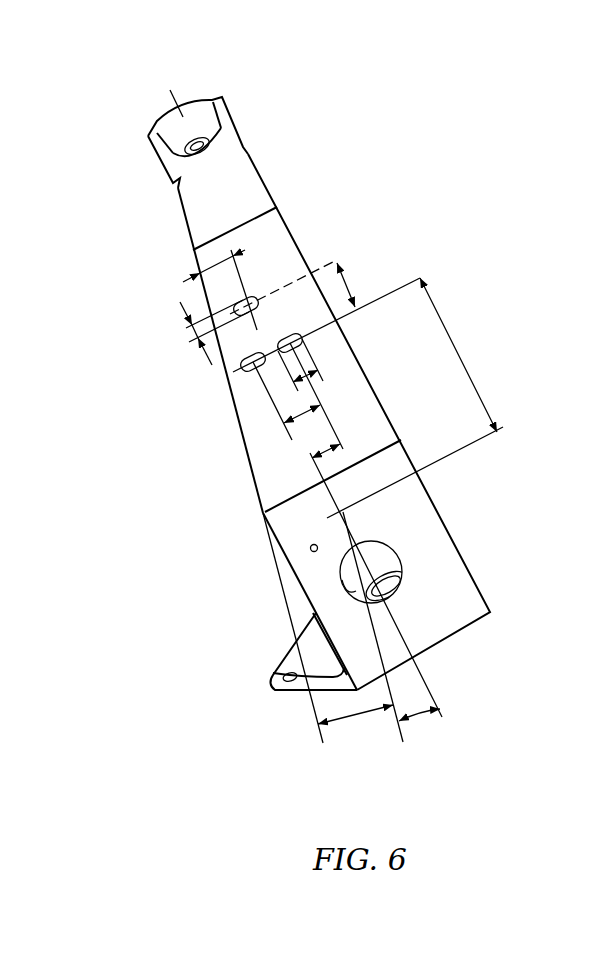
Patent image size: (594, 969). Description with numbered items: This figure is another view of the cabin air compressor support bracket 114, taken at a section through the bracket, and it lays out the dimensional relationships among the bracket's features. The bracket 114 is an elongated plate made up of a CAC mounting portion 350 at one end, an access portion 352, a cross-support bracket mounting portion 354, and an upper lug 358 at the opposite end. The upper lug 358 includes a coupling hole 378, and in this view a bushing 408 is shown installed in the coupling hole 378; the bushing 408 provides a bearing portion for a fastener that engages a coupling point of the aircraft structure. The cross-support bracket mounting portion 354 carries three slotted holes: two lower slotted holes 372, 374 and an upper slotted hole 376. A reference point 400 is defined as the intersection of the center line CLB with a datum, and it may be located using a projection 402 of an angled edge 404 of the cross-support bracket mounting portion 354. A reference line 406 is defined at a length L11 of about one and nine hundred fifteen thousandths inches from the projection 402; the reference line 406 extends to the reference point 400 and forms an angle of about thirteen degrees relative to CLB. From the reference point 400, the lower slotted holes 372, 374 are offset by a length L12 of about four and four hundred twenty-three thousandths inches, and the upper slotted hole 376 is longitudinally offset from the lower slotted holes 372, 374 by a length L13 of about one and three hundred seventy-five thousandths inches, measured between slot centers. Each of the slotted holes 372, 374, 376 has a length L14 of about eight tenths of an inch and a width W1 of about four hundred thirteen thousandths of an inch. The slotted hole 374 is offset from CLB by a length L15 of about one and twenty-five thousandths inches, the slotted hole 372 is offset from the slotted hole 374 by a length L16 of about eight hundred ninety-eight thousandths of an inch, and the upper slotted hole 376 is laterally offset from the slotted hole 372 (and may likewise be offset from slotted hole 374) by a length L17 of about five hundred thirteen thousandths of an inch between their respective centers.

The second CAC support bracket 114 is at (398, 169).
The CAC mounting portion 350 is at (290, 692).
The access portion 352 is at (447, 628).
The cross-support bracket mounting portion 354 is at (257, 462).
The upper lug 358 is at (213, 120).
The lower slotted hole 372 is at (248, 378).
The lower slotted hole 374 is at (305, 338).
The upper slotted hole 376 is at (255, 297).
The coupling hole 378 is at (200, 153).
The reference point 400 is at (349, 513).
The projection 402 is at (280, 580).
The angled edge 404 is at (257, 498).
The reference line 406 is at (400, 737).
The bushing 408 is at (173, 152).
The center line CLB is at (328, 500).
The length L11 is at (357, 718).
The length L12 is at (365, 355).
The length L13 is at (348, 286).
The length L14 is at (284, 423).
The length L15 is at (350, 440).
The length L16 is at (320, 388).
The length L17 is at (192, 266).
The width W1 is at (190, 336).